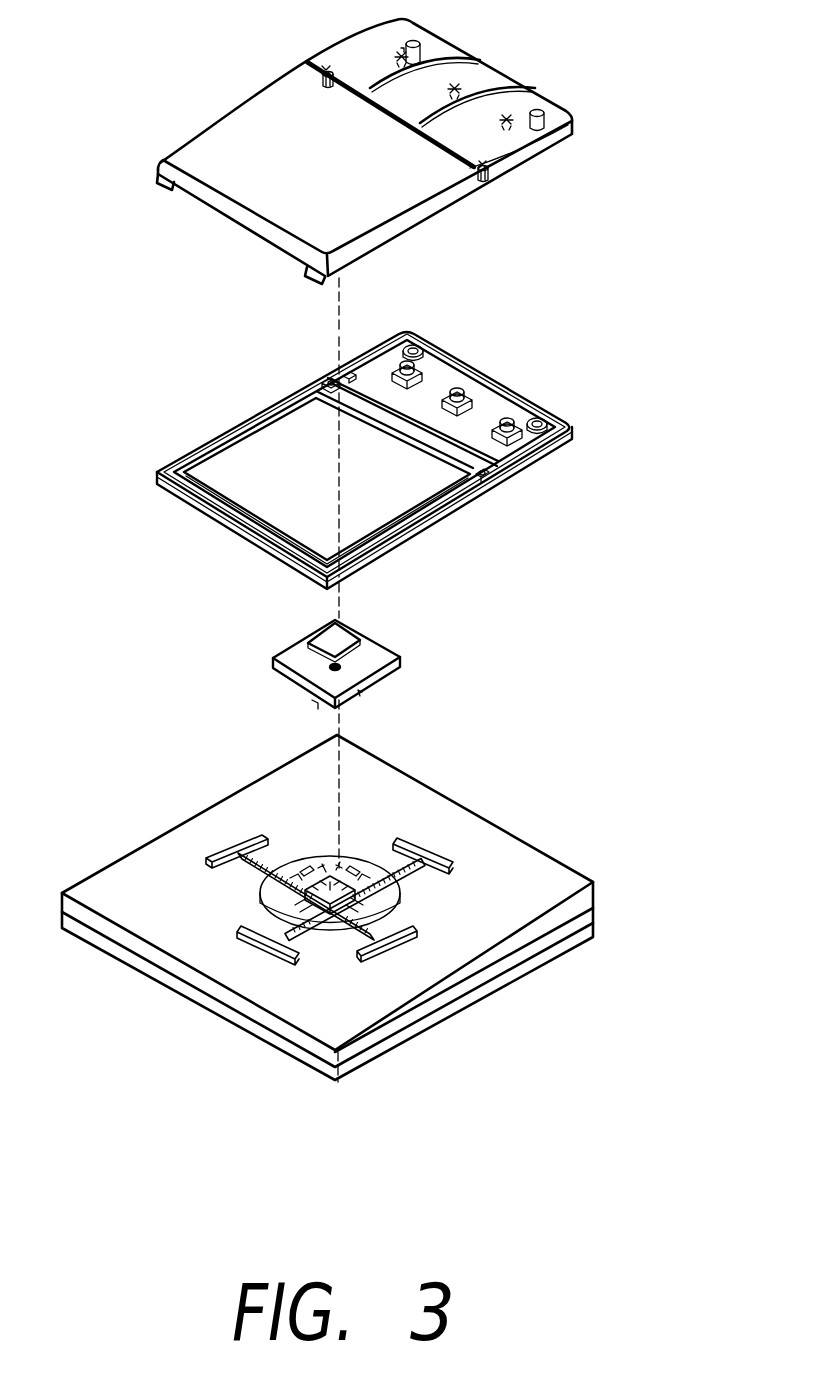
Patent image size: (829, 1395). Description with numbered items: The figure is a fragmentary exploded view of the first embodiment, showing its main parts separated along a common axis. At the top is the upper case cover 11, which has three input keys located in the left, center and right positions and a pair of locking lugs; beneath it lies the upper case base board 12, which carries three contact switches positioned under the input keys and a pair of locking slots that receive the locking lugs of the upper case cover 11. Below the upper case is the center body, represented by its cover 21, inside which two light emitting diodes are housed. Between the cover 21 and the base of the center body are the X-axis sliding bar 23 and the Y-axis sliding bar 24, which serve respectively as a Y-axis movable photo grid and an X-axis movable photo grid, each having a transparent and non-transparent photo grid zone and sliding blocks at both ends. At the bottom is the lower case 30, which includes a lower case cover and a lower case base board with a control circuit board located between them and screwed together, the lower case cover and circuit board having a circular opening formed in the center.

The upper case cover 11 is at (257, 117).
The upper case base board 12 is at (447, 372).
The cover 21 is at (380, 650).
The X-axis sliding bar 23 is at (357, 937).
The Y-axis sliding bar 24 is at (395, 860).
The lower case 30 is at (594, 851).